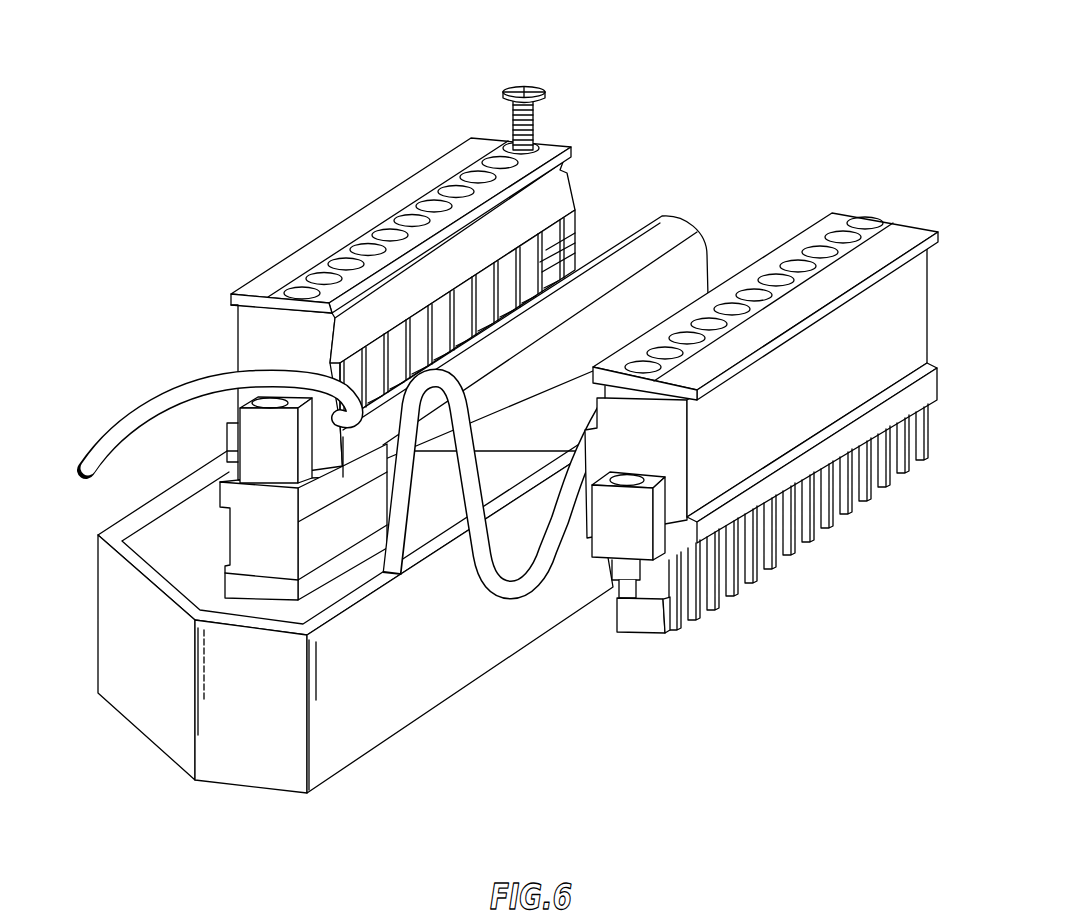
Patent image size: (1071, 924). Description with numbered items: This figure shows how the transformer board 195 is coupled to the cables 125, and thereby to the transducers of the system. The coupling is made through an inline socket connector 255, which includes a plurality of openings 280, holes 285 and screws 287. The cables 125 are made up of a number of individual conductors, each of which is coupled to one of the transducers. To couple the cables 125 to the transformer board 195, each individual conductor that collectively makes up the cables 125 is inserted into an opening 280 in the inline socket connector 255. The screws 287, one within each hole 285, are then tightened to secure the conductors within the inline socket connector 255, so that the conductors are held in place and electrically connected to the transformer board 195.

The cables 125 is at (153, 386).
The transformer board 195 is at (327, 191).
The inline socket connector 255 is at (288, 265).
The opening 280 is at (550, 262).
The hole 285 is at (455, 186).
The screw 287 is at (534, 87).